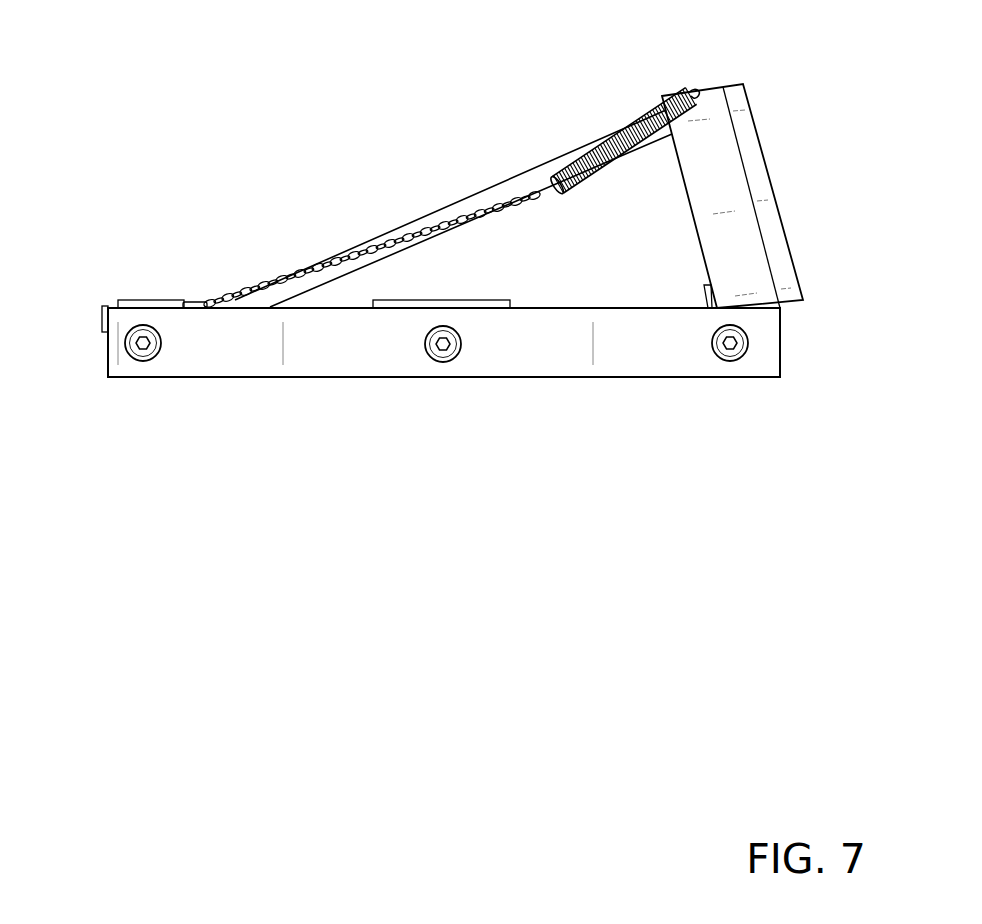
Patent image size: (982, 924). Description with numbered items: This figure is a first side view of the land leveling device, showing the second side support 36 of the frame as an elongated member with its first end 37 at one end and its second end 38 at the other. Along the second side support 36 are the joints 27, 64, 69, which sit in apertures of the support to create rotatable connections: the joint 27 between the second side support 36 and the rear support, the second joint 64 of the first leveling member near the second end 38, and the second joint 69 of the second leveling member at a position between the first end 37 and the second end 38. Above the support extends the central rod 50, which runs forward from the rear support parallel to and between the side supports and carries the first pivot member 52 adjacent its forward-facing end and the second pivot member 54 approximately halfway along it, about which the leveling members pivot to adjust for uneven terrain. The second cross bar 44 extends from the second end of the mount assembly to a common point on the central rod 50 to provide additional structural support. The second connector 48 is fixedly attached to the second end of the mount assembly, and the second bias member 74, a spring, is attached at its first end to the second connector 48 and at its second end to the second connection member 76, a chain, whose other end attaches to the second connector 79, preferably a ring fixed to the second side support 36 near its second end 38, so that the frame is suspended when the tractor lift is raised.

The joint 27 is at (740, 358).
The second side support 36 is at (548, 378).
The first end of the second side support 37 is at (780, 355).
The second end of the second side support 38 is at (108, 352).
The second cross bar 44 is at (480, 190).
The second connector 48 is at (700, 92).
The central rod 50 is at (102, 318).
The first pivot member 52 is at (497, 300).
The second pivot member 54 is at (145, 300).
The second joint of the first leveling member 64 is at (152, 360).
The second joint of the second leveling member 69 is at (432, 358).
The second bias member 74 is at (588, 176).
The second connection member 76 is at (400, 248).
The second connector 79 is at (192, 303).